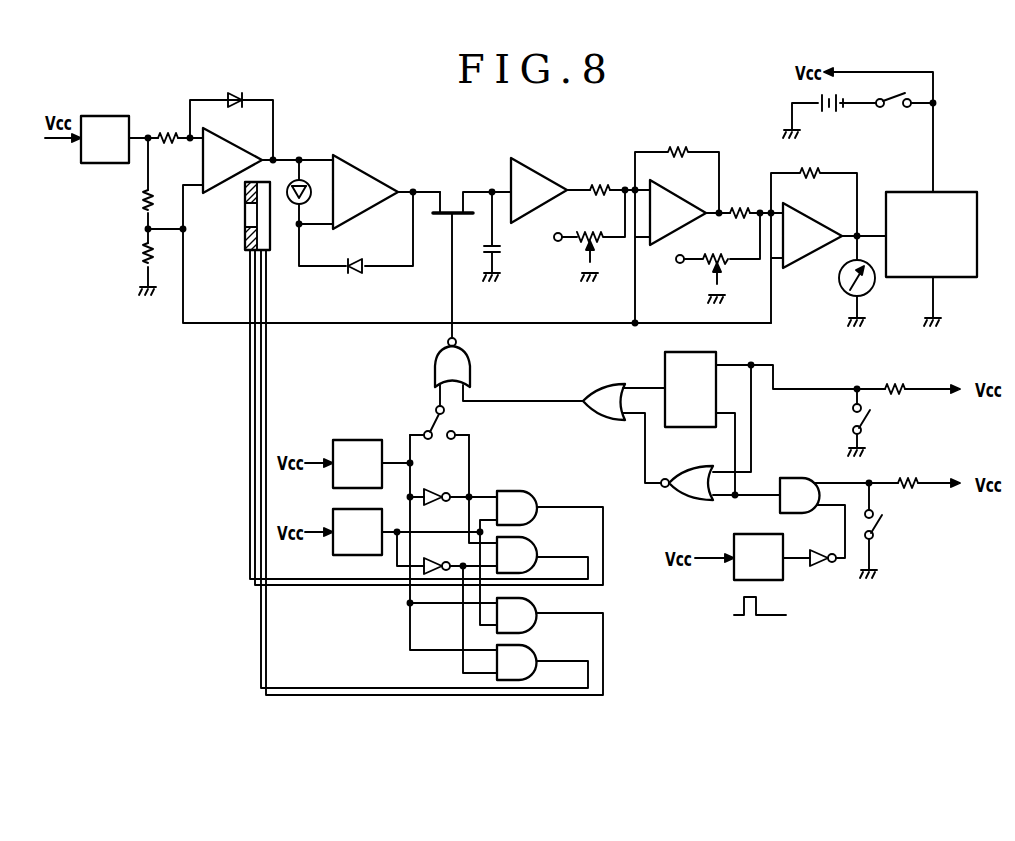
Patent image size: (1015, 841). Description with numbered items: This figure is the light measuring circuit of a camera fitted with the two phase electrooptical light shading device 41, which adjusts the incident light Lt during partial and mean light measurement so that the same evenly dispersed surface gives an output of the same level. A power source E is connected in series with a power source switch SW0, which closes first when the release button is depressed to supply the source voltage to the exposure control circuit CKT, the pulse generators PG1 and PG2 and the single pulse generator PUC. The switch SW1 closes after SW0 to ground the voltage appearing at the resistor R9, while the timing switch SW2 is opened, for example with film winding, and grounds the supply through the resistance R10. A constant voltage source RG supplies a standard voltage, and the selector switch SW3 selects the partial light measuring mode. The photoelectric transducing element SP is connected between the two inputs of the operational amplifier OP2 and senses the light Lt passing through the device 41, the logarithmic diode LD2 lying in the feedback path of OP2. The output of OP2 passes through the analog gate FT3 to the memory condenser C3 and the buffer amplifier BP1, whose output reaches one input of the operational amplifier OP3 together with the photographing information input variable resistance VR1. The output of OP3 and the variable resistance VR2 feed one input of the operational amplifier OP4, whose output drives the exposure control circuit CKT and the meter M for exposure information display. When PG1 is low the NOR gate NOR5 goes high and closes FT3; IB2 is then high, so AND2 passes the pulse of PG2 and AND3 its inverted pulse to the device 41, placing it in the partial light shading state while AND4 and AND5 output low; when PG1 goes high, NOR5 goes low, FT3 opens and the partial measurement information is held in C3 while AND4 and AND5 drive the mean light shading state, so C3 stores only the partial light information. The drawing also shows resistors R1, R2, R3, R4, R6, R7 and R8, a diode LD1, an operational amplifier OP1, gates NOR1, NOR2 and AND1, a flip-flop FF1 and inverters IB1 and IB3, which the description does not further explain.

The constant voltage source RG is at (105, 139).
The resistor R1 is at (161, 203).
The resistor R2 is at (161, 256).
The resistor R3 is at (169, 127).
The diode LD1 is at (231, 116).
The operational amplifier OP1 is at (232, 160).
The electrooptical light shading device 41 is at (235, 251).
The light Lt is at (233, 219).
The light measurement photoelectric transducing element SP is at (308, 192).
The operational amplifier OP2 is at (365, 192).
The logarithmic diode LD2 is at (359, 281).
The analog gate FT3 is at (462, 245).
The memory condenser C3 is at (504, 236).
The buffer amplifier BP1 is at (539, 190).
The resistor R4 is at (600, 178).
The photographing information input variable resistance VR1 is at (589, 235).
The resistor R6 is at (677, 167).
The operational amplifier OP3 is at (678, 212).
The resistor R7 is at (739, 199).
The photographing information input variable resistance VR2 is at (718, 258).
The resistor R8 is at (814, 190).
The operational amplifier OP4 is at (812, 235).
The meter M is at (845, 281).
The exposure control circuit CKT is at (931, 259).
The power source E is at (814, 118).
The power source switch SW0 is at (889, 116).
The NOR gate NOR5 is at (509, 372).
The selector switch SW3 is at (452, 423).
The NOR gate NOR1 is at (624, 421).
The flip-flop FF1 is at (690, 378).
The resistor R9 is at (894, 375).
The switch SW1 is at (877, 422).
The NOR gate NOR2 is at (687, 497).
The AND gate AND1 is at (839, 505).
The resistance R10 is at (909, 470).
The timing switch SW2 is at (893, 530).
The single pulse generator PUC is at (760, 574).
The inverter IB1 is at (809, 576).
The pulse generator PG1 is at (357, 464).
The pulse generator PG2 is at (357, 532).
The inverter IB2 is at (453, 487).
The inverter IB3 is at (460, 556).
The AND gate AND2 is at (518, 497).
The AND gate AND3 is at (531, 549).
The AND gate AND4 is at (531, 610).
The AND gate AND5 is at (531, 657).